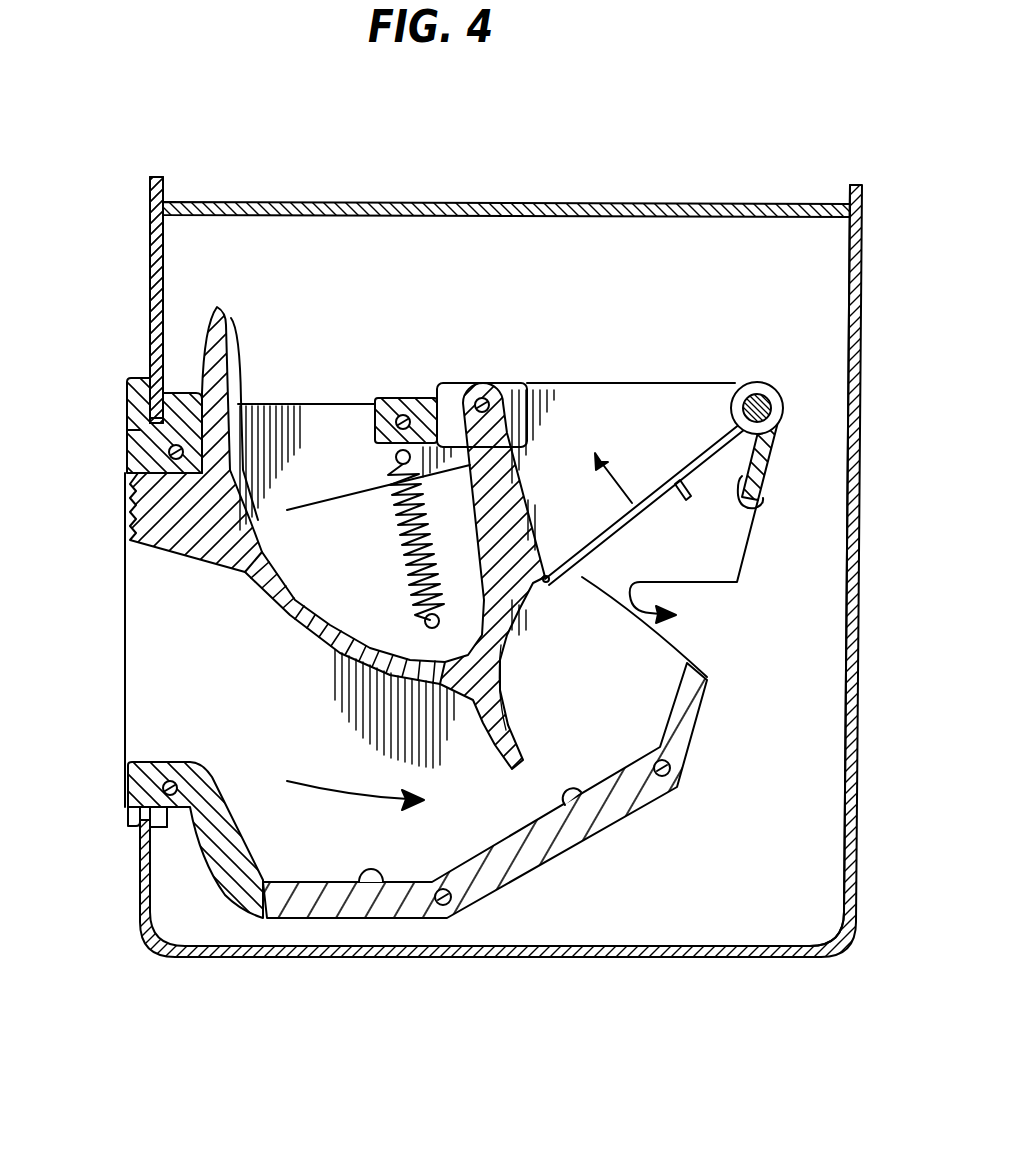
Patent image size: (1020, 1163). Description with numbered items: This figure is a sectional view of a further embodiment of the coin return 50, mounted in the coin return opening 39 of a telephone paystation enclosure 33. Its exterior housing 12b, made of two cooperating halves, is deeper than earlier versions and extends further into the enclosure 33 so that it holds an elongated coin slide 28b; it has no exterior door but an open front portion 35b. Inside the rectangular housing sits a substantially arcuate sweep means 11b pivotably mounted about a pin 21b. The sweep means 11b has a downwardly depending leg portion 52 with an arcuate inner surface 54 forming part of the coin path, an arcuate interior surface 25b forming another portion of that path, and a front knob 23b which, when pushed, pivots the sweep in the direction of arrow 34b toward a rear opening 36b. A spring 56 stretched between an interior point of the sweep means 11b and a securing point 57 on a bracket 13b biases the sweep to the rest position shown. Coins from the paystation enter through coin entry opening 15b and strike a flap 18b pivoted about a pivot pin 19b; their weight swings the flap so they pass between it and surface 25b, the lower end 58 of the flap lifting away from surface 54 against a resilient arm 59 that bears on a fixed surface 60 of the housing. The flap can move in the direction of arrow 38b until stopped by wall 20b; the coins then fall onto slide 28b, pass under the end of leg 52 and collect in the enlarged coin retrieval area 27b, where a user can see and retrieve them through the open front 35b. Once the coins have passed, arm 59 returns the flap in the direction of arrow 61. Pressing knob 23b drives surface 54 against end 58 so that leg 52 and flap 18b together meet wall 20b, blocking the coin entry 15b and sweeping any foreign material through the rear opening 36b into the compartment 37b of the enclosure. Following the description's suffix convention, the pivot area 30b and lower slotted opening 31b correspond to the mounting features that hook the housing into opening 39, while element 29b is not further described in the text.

The coin return 50 is at (474, 563).
The telephone paystation enclosure 33 is at (150, 233).
The sweep means 11b is at (310, 627).
The exterior housing 12b is at (128, 388).
The bracket 13b is at (430, 398).
The coin entry opening 15b is at (703, 403).
The flap 18b is at (697, 467).
The pivot pin 19b is at (763, 385).
The wall 20b is at (683, 660).
The pivot pin 21b is at (487, 402).
The knob 23b is at (130, 540).
The arcuate interior surface 25b is at (517, 533).
The coin retrieval area 27b is at (377, 886).
The coin slide 28b is at (577, 800).
The tab 29b is at (687, 502).
The lower block 30b is at (195, 850).
The tab 31b is at (152, 828).
The arrow 34b is at (320, 792).
The open front portion 35b is at (145, 727).
The rear opening 36b is at (723, 560).
The storage area 37b is at (764, 813).
The arrow 38b is at (615, 607).
The coin return opening 39 is at (128, 433).
The leg portion 52 is at (493, 747).
The arcuate inner surface 54 is at (510, 693).
The spring 56 is at (403, 547).
The securing point 57 is at (403, 418).
The lower end 58 is at (549, 582).
The resilient arm 59 is at (743, 513).
The fixed surface 60 is at (777, 450).
The arrow 61 is at (615, 492).